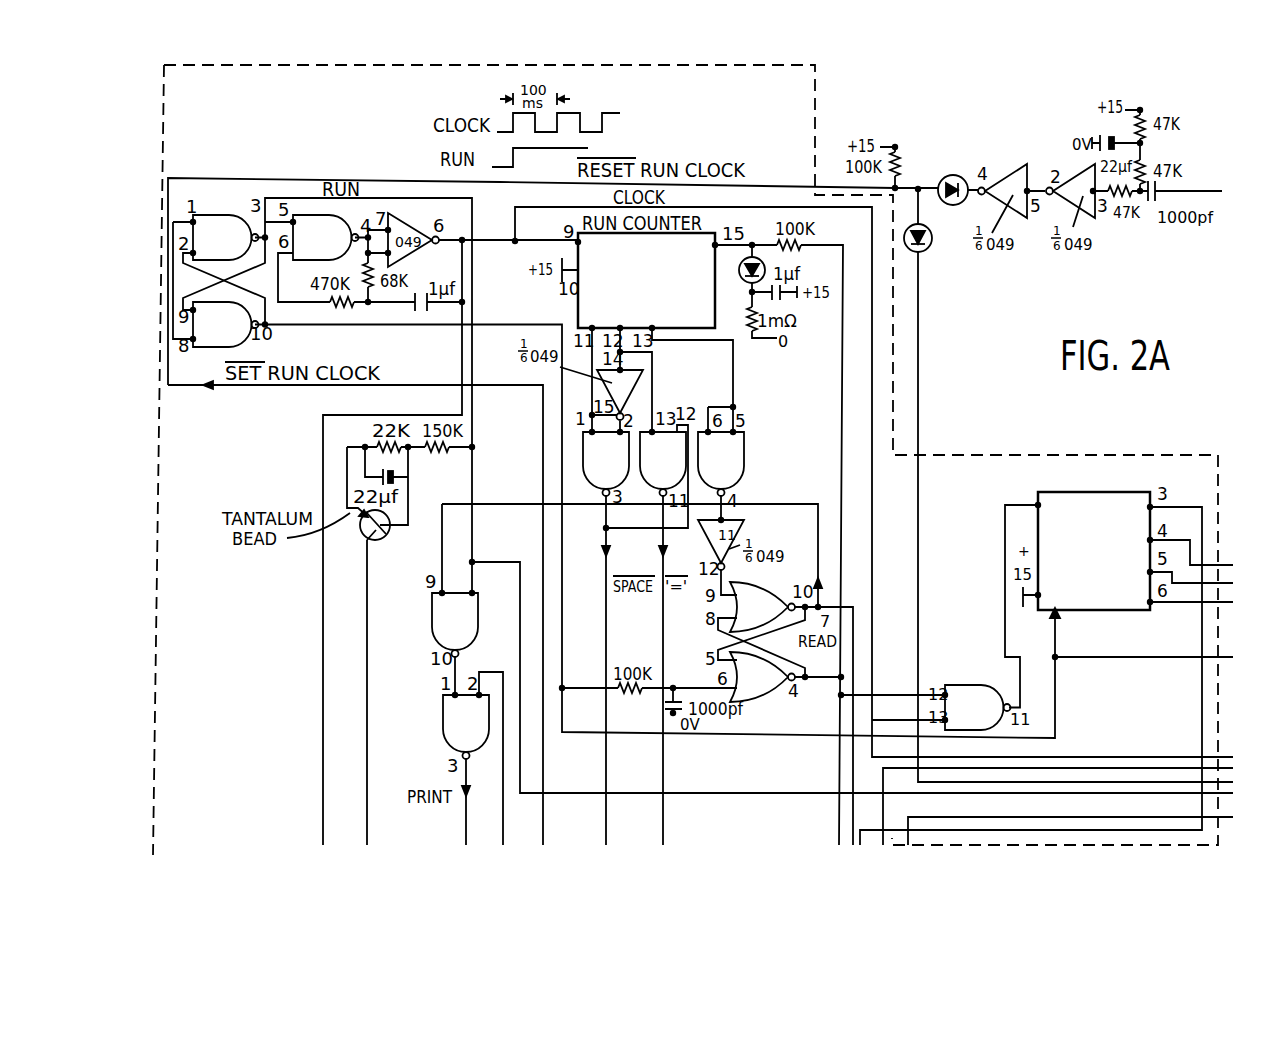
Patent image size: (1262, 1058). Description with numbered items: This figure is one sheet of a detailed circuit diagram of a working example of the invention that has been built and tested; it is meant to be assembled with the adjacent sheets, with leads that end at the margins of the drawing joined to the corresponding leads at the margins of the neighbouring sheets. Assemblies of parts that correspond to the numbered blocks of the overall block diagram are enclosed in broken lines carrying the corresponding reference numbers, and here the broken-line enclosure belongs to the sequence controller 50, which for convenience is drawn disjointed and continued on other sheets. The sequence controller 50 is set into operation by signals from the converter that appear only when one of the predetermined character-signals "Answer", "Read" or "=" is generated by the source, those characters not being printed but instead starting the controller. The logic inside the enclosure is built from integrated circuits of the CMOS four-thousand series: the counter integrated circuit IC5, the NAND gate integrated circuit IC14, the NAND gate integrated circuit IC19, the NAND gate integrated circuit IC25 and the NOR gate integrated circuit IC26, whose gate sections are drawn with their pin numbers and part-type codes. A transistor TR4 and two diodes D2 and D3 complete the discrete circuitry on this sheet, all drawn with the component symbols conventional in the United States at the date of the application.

The sequence controller 50 is at (945, 457).
The counter integrated circuit IC5 is at (647, 261).
The NAND gate integrated circuit IC14 is at (588, 544).
The NAND gate integrated circuit IC19 is at (602, 472).
The NAND gate integrated circuit IC25 is at (466, 727).
The NOR gate integrated circuit IC26 is at (762, 642).
The transistor TR4 is at (388, 533).
The diode D2 is at (953, 178).
The diode D3 is at (930, 245).